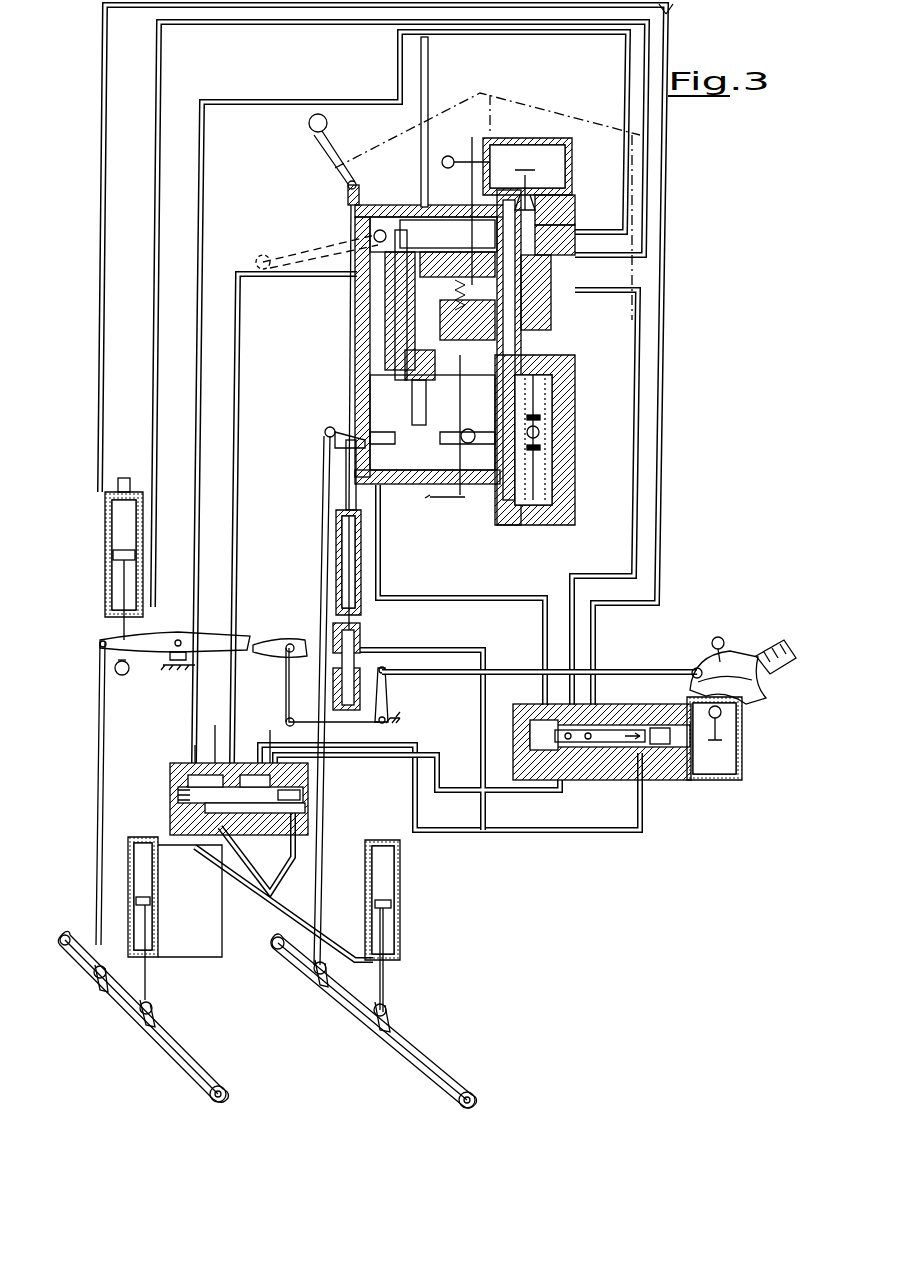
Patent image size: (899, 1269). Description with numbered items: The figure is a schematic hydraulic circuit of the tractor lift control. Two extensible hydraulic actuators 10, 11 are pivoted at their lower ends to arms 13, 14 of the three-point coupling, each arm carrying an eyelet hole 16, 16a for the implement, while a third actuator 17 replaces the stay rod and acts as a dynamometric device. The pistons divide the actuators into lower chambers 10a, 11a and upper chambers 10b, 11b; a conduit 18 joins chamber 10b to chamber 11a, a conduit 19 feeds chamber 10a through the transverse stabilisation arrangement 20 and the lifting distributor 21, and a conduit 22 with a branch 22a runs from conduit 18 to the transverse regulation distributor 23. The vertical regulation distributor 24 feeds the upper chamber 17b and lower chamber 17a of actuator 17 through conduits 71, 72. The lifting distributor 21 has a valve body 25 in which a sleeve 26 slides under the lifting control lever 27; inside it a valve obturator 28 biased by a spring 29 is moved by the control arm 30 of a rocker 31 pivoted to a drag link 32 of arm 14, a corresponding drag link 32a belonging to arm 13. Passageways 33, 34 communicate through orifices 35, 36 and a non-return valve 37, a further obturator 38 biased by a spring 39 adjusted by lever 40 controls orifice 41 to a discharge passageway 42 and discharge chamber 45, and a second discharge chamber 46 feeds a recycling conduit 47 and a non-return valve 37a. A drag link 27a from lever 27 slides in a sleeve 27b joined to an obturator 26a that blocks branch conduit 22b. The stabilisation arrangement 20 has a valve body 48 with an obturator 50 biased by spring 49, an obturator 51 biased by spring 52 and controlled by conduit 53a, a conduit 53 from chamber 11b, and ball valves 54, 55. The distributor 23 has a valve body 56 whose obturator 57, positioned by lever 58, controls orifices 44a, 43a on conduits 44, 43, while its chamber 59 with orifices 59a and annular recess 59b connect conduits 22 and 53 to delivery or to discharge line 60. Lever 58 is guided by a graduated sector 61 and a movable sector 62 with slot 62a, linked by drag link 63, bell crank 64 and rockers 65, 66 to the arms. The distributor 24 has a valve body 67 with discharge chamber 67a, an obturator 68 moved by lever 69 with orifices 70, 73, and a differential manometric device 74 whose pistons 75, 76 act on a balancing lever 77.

The extensible hydraulic actuator 10 is at (163, 892).
The lower chamber 10a is at (158, 935).
The upper chamber 10b is at (130, 880).
The extensible hydraulic actuator 11 is at (400, 905).
The lower chamber 11a is at (398, 938).
The upper chamber 11b is at (398, 880).
The arm 13 is at (152, 1050).
The arm 14 is at (325, 1002).
The eyelet hole 16 is at (212, 1092).
The eyelet hole 16a is at (455, 1101).
The extensible hydraulic actuator 17 is at (98, 548).
The lower chamber 17a is at (113, 580).
The upper chamber 17b is at (113, 525).
The conduit 18 is at (350, 955).
The conduit 19 is at (240, 390).
The transverse stabilisation arrangement 20 is at (190, 895).
The lifting distributor 21 is at (372, 148).
The conduit 22 is at (280, 875).
The branch 22a is at (305, 810).
The branch conduit 22b is at (475, 800).
The transverse regulation distributor 23 is at (715, 788).
The vertical regulation distributor 24 is at (548, 95).
The valve body 25 is at (360, 292).
The sleeve 26 is at (362, 372).
The valve obturator 26a is at (358, 658).
The lifting control lever 27 is at (325, 160).
The drag link 27a is at (345, 483).
The sleeve 27b is at (336, 548).
The valve obturator 28 is at (405, 405).
The spring 29 is at (400, 215).
The control arm 30 is at (440, 500).
The pivoted rocker 31 is at (378, 490).
The drag link 32 is at (322, 455).
The drag link 32a is at (103, 808).
The passageway 33 is at (610, 285).
The passageway 34 is at (590, 330).
The orifice 35 is at (472, 222).
The orifice 36 is at (362, 344).
The non-return valve 37 is at (362, 322).
The non-return valve 37a is at (550, 268).
The valve obturator 38 is at (520, 350).
The spring 39 is at (552, 400).
The adjustment lever 40 is at (442, 500).
The orifice 41 is at (428, 396).
The discharge passageway 42 is at (552, 380).
The conduit 43 is at (640, 405).
The orifice 43a is at (558, 755).
The conduit 44 is at (662, 355).
The orifice 44a is at (602, 760).
The discharge chamber 45 is at (478, 470).
The discharge chamber 46 is at (470, 137).
The recycling conduit 47 is at (420, 60).
The valve body 48 is at (310, 778).
The spring 49 is at (180, 765).
The valve obturator 50 is at (270, 760).
The obturator 51 is at (236, 835).
The spring 52 is at (175, 800).
The conduit 53 is at (455, 790).
The conduit 53a is at (262, 835).
The spring loaded ball valve 54 is at (216, 762).
The spring loaded ball valve 55 is at (270, 745).
The valve body 56 is at (512, 715).
The valve obturator 57 is at (672, 785).
The transverse regulation control lever 58 is at (718, 637).
The internal distributor chamber 59 is at (605, 725).
The orifice 59a is at (635, 730).
The annular recess 59b is at (672, 785).
The discharge line 60 is at (505, 600).
The graduated sector 61 is at (735, 738).
The movable sector 62 is at (708, 655).
The slot 62a is at (742, 652).
The drag link 63 is at (455, 676).
The bell crank 64 is at (388, 690).
The rocker 65 is at (298, 640).
The rocker 66 is at (215, 635).
The valve body 67 is at (565, 505).
The discharge chamber 67a is at (550, 145).
The valve obturator 68 is at (565, 195).
The control lever 69 is at (447, 156).
The orifice 70 is at (560, 225).
The conduit 71 is at (650, 178).
The conduit 72 is at (640, 142).
The orifice 73 is at (560, 310).
The differential manometric device 74 is at (552, 455).
The piston 75 is at (552, 480).
The piston 76 is at (548, 432).
The balancing lever 77 is at (474, 428).